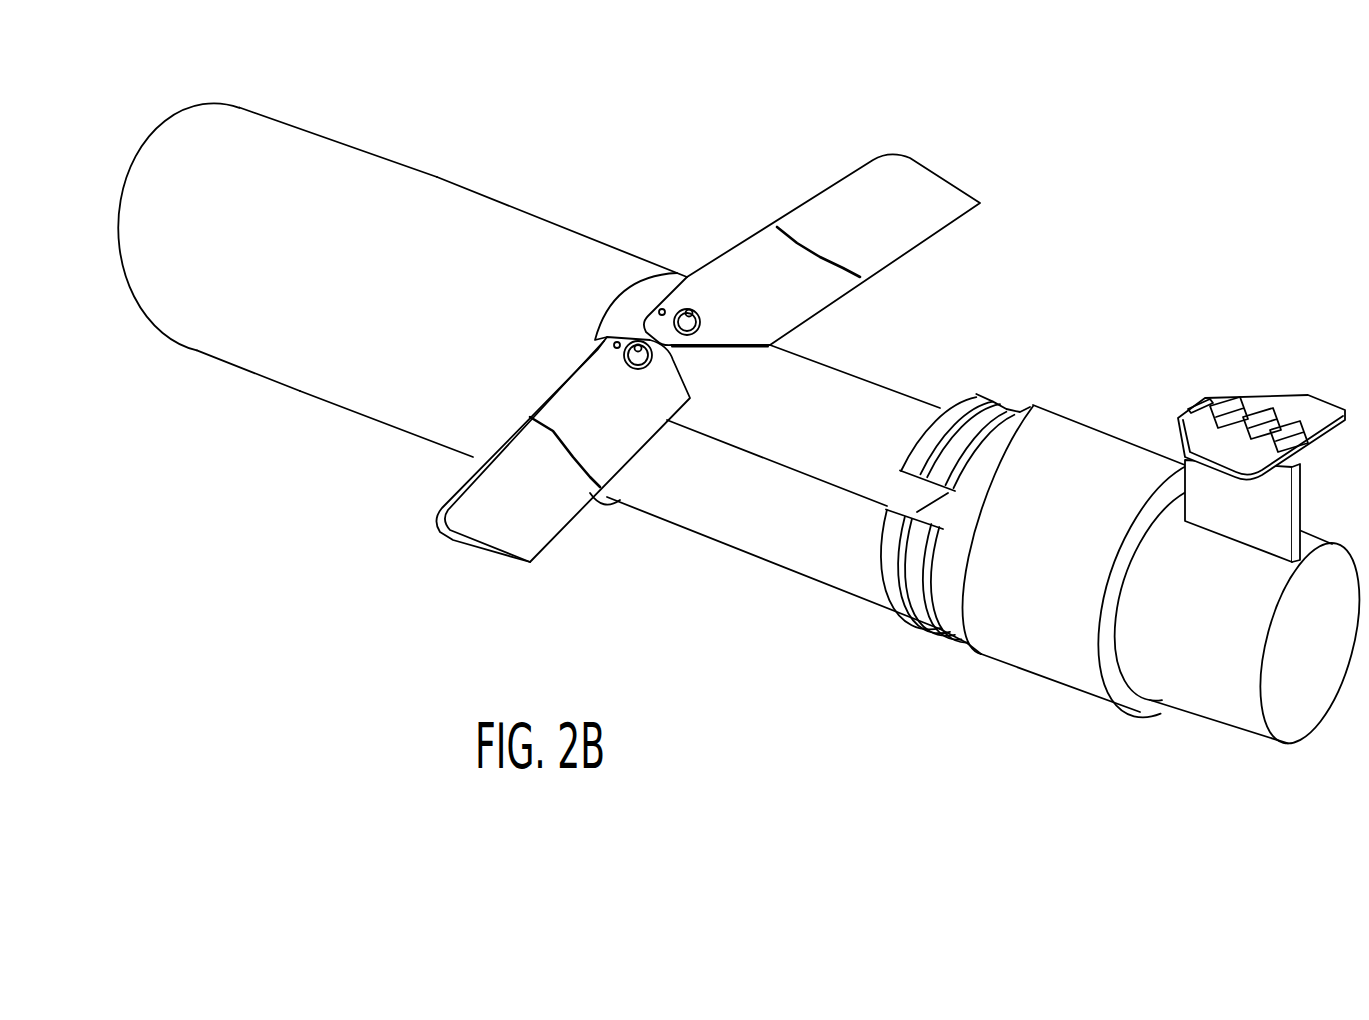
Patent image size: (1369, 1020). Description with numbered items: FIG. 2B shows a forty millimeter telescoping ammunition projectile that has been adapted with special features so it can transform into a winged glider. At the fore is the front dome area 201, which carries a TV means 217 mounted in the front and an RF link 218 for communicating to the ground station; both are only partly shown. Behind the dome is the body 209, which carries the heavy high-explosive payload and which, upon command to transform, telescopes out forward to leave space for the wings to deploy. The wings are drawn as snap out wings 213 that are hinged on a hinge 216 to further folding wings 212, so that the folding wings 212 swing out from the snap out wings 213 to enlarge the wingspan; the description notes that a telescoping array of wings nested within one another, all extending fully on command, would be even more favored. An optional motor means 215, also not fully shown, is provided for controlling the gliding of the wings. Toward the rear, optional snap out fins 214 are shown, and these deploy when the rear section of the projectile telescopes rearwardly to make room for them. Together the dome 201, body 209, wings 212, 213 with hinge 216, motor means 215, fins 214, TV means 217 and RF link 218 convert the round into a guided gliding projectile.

The front dome area 201 is at (132, 293).
The body 209 is at (430, 177).
The folding wings 212 is at (940, 172).
The snap out wings 213 is at (697, 343).
The snap out fins 214 is at (1267, 397).
The motor means 215 is at (700, 313).
The hinge 216 is at (797, 247).
The TV means 217 is at (143, 160).
The RF link 218 is at (250, 140).